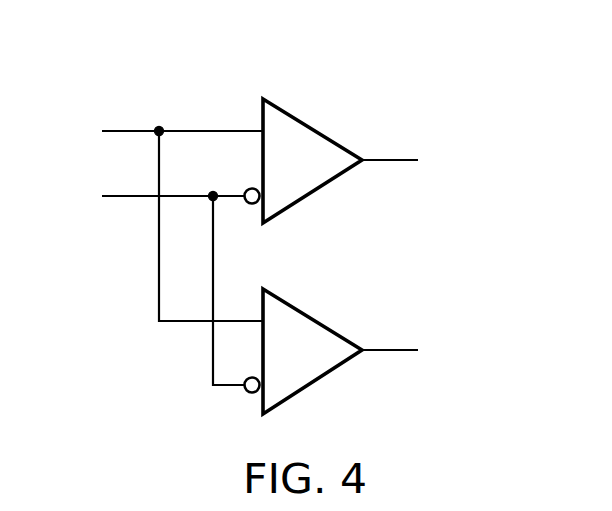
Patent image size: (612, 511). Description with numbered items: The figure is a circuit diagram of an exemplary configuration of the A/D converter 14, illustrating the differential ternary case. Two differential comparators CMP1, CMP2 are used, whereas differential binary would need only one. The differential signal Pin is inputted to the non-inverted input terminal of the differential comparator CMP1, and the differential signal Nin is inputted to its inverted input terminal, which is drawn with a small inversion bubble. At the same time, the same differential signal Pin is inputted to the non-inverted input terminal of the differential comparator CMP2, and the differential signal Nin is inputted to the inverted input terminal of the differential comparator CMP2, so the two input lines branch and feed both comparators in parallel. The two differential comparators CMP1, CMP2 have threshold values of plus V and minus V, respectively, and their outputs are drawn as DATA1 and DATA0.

The A/D converter 14 is at (417, 78).
The differential comparator CMP1 is at (315, 131).
The differential comparator CMP2 is at (313, 320).
The differential signal Pin is at (163, 220).
The differential signal Nin is at (153, 284).
The first output data DATA1 is at (427, 163).
The second output data DATA0 is at (427, 351).